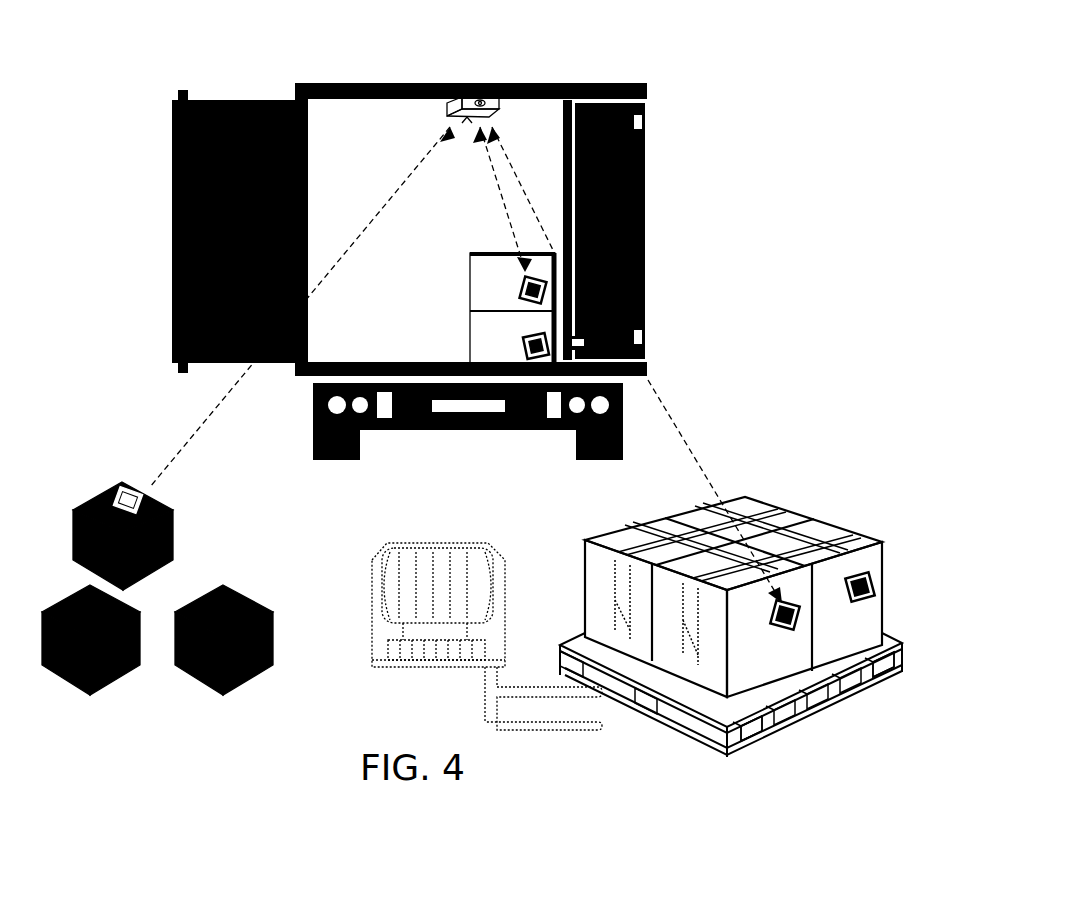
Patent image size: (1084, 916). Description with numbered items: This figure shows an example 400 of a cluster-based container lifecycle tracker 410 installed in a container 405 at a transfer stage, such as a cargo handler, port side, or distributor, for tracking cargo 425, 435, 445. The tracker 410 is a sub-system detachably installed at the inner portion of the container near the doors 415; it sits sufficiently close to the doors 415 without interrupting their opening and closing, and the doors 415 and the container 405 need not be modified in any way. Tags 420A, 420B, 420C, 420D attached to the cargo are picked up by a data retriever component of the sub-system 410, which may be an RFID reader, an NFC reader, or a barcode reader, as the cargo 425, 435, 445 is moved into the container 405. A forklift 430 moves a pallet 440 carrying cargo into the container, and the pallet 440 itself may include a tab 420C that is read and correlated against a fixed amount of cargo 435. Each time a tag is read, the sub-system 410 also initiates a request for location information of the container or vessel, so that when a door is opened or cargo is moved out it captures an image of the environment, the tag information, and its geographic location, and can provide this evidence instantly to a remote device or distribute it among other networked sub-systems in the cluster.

The example 400 is at (832, 158).
The container 405 is at (650, 184).
The cluster-based container lifecycle tracker 410 is at (433, 90).
The doors 415 is at (172, 196).
The tag 420A is at (130, 477).
The tag 420B is at (515, 293).
The tab 420C is at (770, 742).
The tag 420D is at (883, 690).
The cargo 425 is at (233, 580).
The forklift 430 is at (393, 632).
The cargo 435 is at (793, 503).
The pallet 440 is at (908, 635).
The cargo 445 is at (470, 280).